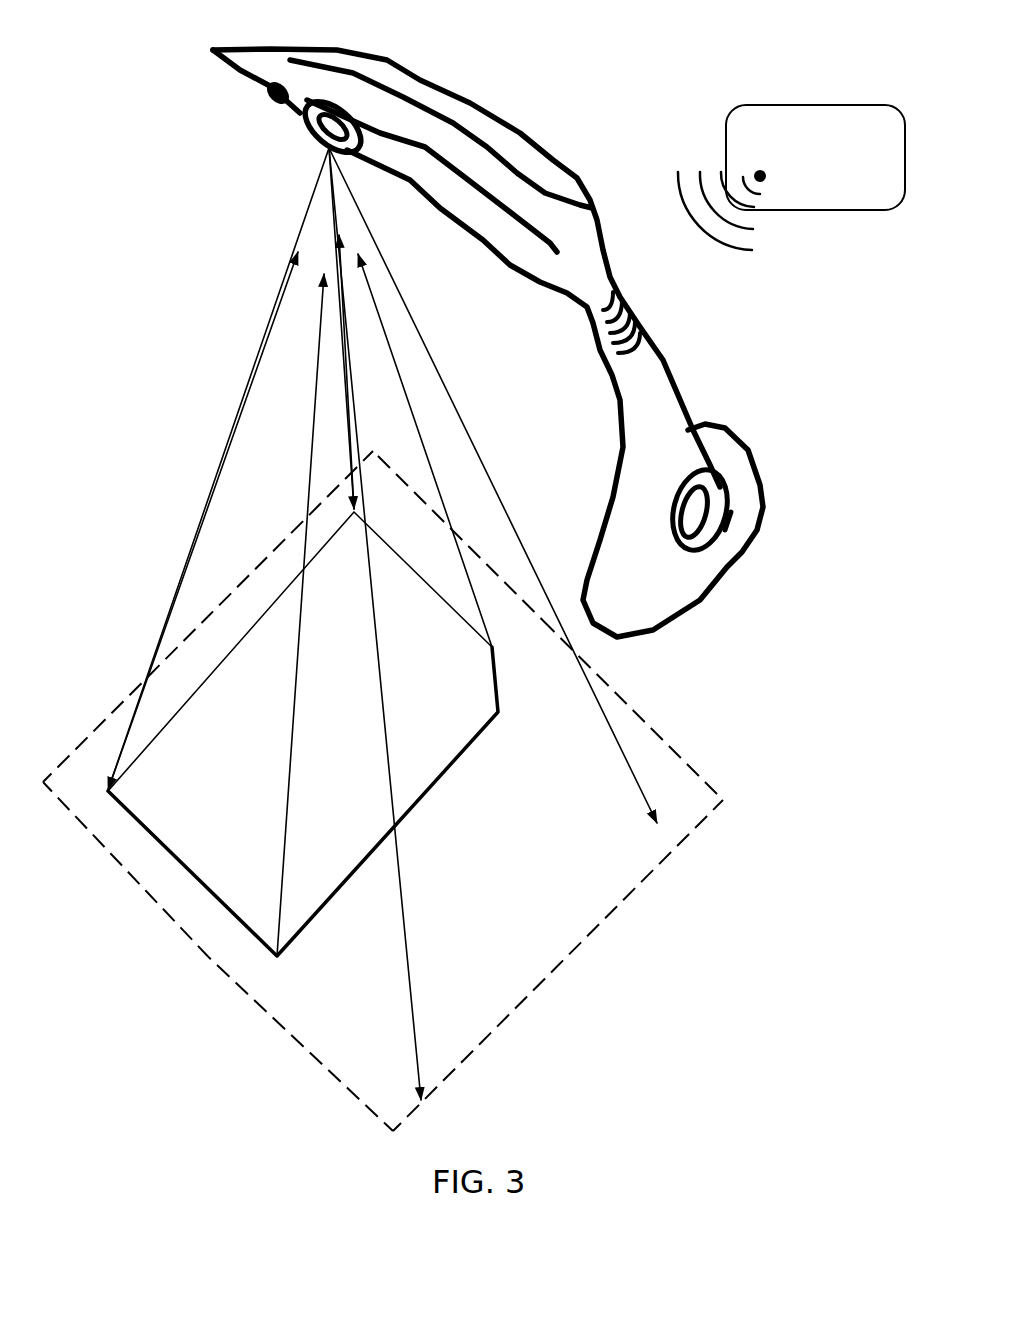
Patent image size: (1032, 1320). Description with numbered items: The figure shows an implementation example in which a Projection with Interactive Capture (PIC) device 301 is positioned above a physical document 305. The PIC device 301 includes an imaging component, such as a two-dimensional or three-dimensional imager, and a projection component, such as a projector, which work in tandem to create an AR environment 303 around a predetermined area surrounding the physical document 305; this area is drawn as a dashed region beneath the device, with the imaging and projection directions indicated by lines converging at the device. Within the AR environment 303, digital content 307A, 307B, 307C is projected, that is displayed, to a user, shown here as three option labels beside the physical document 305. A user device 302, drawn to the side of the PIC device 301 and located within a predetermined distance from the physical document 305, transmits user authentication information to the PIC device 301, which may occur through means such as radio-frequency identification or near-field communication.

The Projection with Interactive Capture (PIC) device 301 is at (700, 432).
The user device 302 is at (790, 213).
The AR environment 303 is at (690, 840).
The physical document 305 is at (165, 855).
The digital content 307A is at (600, 880).
The digital content 307B is at (543, 937).
The digital content 307C is at (493, 992).